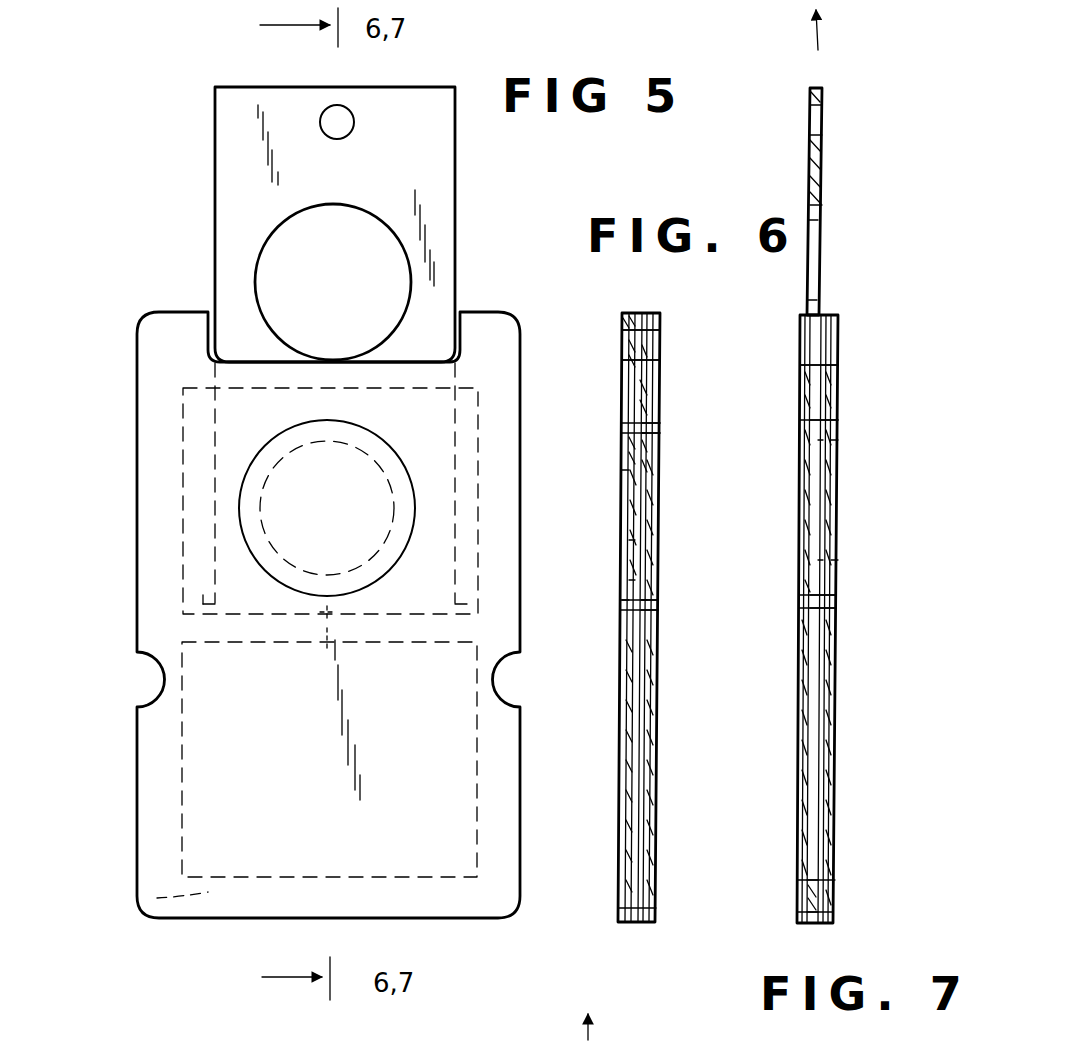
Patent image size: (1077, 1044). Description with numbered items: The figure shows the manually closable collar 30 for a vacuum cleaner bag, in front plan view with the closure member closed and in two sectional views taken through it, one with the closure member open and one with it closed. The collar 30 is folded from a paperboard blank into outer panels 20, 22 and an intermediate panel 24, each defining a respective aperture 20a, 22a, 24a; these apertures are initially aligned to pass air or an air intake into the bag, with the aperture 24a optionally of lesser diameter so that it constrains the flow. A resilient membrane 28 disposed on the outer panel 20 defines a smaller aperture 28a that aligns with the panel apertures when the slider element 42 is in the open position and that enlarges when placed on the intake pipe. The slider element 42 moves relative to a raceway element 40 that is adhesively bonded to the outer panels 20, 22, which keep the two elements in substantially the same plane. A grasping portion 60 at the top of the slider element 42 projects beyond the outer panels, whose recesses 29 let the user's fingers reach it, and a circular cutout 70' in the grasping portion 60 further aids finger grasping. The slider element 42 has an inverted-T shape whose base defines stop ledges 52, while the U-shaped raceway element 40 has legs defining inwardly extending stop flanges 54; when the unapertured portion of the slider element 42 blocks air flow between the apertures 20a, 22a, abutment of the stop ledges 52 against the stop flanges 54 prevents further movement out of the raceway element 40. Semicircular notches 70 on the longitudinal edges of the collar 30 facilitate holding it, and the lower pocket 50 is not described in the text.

In FIG. 5, the outer panel 20 is at (155, 803).
In FIG. 6, the outer panel 20 is at (658, 381).
In FIG. 7, the outer panel 20 is at (840, 382).
In FIG. 5, the aperture 20a is at (268, 445).
In FIG. 7, the aperture 20a is at (830, 523).
In FIG. 6, the outer panel 22 is at (625, 403).
In FIG. 7, the outer panel 22 is at (802, 393).
In FIG. 6, the aperture 22a is at (623, 485).
In FIG. 6, the intermediate panel 24 is at (630, 385).
In FIG. 7, the intermediate panel 24 is at (815, 88).
In FIG. 5, the aperture 24a is at (384, 296).
In FIG. 6, the aperture 24a is at (630, 537).
In FIG. 7, the aperture 24a is at (818, 248).
In FIG. 5, the resilient membrane 28 is at (243, 483).
In FIG. 6, the resilient membrane 28 is at (658, 433).
In FIG. 7, the resilient membrane 28 is at (832, 408).
In FIG. 6, the aperture 28a is at (645, 506).
In FIG. 7, the aperture 28a is at (820, 474).
In FIG. 6, the recess 29 is at (621, 337).
In FIG. 7, the recess 29 is at (799, 318).
In FIG. 5, the collar 30 is at (184, 300).
In FIG. 6, the collar 30 is at (603, 905).
In FIG. 7, the collar 30 is at (784, 853).
In FIG. 5, the raceway element 40 is at (162, 847).
In FIG. 7, the raceway element 40 is at (810, 787).
In FIG. 5, the slider element 42 is at (440, 182).
In FIG. 6, the slider element 42 is at (641, 314).
In FIG. 7, the slider element 42 is at (823, 172).
In FIG. 5, the lower pocket 50 is at (296, 732).
In FIG. 7, the lower pocket 50 is at (797, 718).
In FIG. 5, the stop ledge 52 is at (182, 622).
In FIG. 5, the stop flange 54 is at (203, 603).
In FIG. 5, the grasping portion 60 is at (250, 86).
In FIG. 6, the grasping portion 60 is at (623, 321).
In FIG. 7, the grasping portion 60 is at (822, 98).
In FIG. 5, the notch 70 is at (325, 686).
In FIG. 5, the circular cutout 70' is at (371, 126).